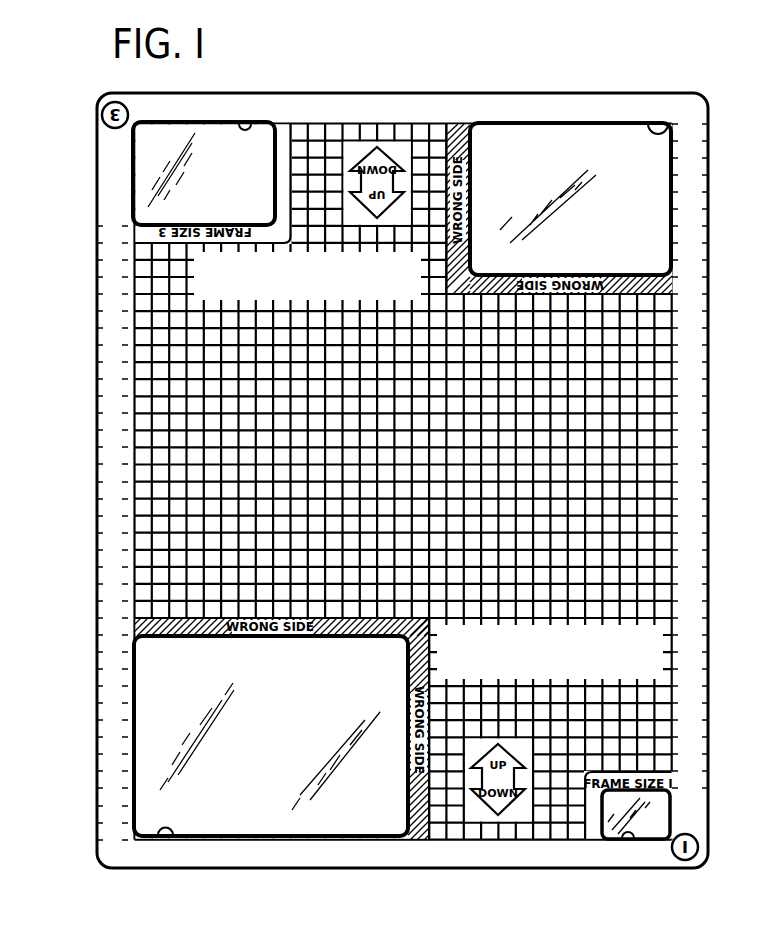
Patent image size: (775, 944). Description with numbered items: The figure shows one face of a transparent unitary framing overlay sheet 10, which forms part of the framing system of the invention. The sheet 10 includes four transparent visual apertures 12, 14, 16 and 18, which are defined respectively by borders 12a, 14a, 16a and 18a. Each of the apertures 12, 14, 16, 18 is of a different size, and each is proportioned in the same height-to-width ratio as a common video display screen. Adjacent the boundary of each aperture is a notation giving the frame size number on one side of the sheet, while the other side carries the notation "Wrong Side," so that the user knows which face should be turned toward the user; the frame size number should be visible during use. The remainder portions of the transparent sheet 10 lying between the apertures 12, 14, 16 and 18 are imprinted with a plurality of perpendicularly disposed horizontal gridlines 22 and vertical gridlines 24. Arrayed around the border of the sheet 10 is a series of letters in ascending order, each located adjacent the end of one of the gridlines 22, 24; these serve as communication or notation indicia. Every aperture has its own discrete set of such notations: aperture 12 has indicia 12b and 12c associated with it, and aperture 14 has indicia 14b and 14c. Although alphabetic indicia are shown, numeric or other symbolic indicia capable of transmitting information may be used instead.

The transparent unitary framing overlay sheet 10 is at (601, 78).
The transparent visual aperture 12 is at (662, 815).
The border 12a is at (628, 840).
The indicia 12b is at (710, 690).
The indicia 12c is at (541, 870).
The transparent visual aperture 14 is at (198, 128).
The border 14a is at (244, 122).
The indicia 14b is at (98, 222).
The indicia 14c is at (372, 88).
The transparent visual aperture 16 is at (552, 128).
The border 16a is at (651, 120).
The transparent visual aperture 18 is at (265, 818).
The border 18a is at (165, 836).
The horizontal gridlines 22 is at (650, 398).
The vertical gridlines 24 is at (455, 126).